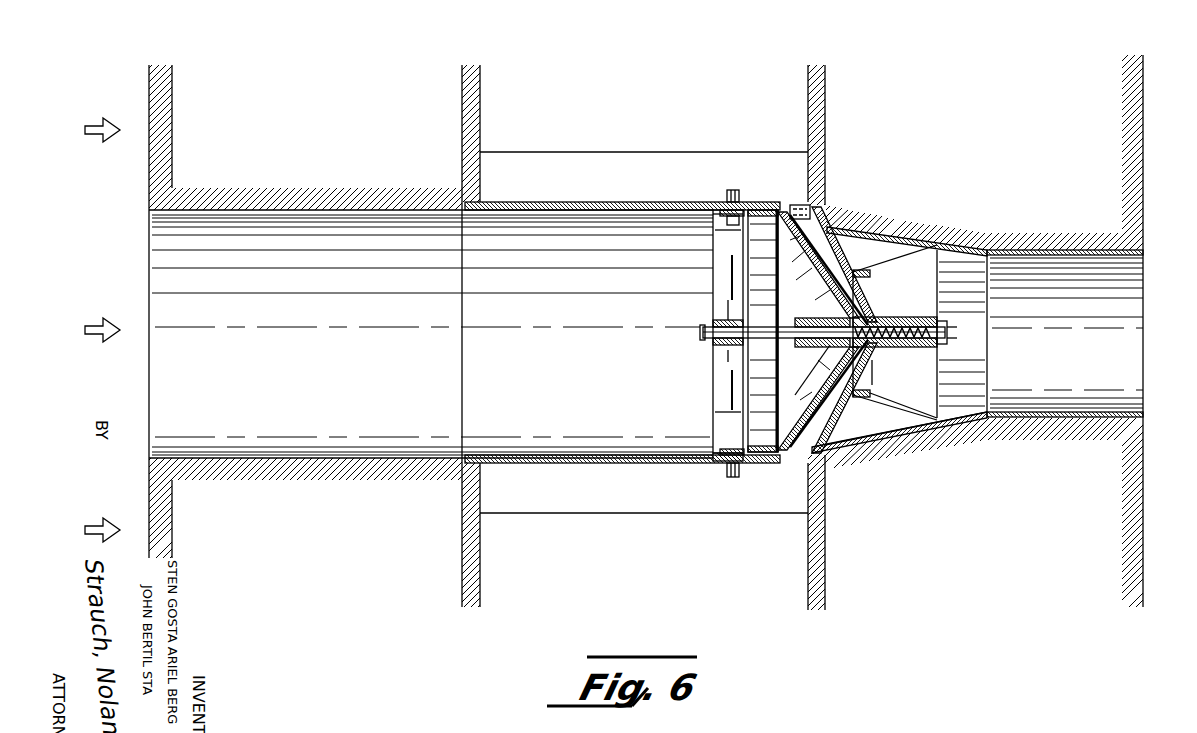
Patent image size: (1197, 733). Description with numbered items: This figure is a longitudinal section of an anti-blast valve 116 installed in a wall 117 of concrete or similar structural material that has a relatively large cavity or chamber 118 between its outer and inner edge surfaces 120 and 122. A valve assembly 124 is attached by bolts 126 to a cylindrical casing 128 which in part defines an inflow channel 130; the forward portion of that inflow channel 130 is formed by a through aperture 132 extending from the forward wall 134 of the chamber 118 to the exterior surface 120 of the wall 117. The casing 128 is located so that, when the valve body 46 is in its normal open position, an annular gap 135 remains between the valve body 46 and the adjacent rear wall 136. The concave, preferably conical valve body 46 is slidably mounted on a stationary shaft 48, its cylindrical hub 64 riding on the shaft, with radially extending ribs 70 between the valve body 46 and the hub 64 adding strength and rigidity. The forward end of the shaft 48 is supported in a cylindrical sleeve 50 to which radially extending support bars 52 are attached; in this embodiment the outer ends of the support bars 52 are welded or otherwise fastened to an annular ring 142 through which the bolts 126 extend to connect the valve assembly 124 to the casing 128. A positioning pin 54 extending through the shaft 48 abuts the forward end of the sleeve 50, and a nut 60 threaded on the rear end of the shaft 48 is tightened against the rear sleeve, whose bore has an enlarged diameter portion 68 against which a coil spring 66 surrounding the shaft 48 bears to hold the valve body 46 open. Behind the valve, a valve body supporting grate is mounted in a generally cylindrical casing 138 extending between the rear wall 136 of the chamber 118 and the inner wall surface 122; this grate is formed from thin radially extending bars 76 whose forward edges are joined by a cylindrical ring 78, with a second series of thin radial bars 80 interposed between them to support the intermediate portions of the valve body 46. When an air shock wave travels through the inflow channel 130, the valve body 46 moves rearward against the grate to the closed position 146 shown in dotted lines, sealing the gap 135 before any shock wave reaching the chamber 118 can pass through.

The valve body 46 is at (812, 242).
The shaft 48 is at (702, 332).
The cylindrical sleeve 50 is at (736, 355).
The support bars 52 is at (720, 240).
The positioning pin 54 is at (700, 344).
The nut 60 is at (944, 344).
The cylindrical hub 64 is at (796, 320).
The coil spring 66 is at (880, 330).
The enlarged diameter portion 68 is at (905, 348).
The radially extending ribs 70 is at (818, 298).
The radially extending bars 76 is at (935, 386).
The cylindrical ring 78 is at (866, 392).
The second radial bars 80 is at (874, 440).
The anti-blast valve 116 is at (444, 170).
The wall 117 is at (147, 84).
The chamber 118 is at (642, 120).
The outer edge surface 120 is at (148, 196).
The inner edge surface 122 is at (1141, 150).
The valve assembly 124 is at (718, 276).
The bolts 126 is at (733, 190).
The cylindrical casing 128 is at (617, 202).
The inflow channel 130 is at (162, 265).
The through aperture 132 is at (308, 460).
The forward wall 134 is at (481, 108).
The annular gap 135 is at (800, 220).
The rear wall 136 is at (800, 592).
The cylindrical casing 138 is at (1025, 250).
The annular ring 142 is at (714, 452).
The closed position 146 is at (818, 388).